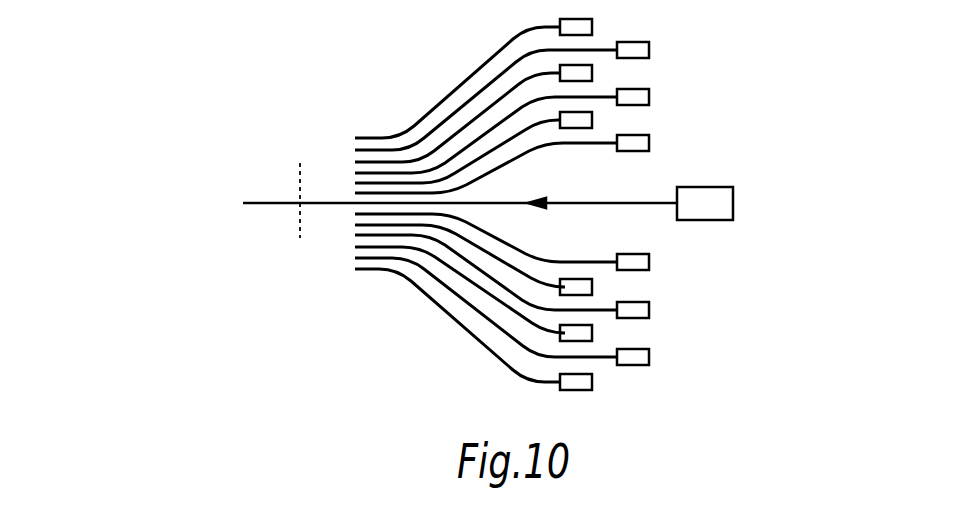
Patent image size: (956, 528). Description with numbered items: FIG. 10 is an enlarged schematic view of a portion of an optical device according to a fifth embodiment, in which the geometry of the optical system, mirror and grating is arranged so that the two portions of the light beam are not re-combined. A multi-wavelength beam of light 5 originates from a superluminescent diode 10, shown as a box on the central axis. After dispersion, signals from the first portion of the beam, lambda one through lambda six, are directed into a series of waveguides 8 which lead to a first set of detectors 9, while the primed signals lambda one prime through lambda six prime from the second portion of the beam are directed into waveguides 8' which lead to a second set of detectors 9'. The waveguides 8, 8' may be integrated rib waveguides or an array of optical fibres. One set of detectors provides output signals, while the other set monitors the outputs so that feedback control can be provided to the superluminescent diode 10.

The incident multi-wavelength divergent beam of light 5 is at (581, 203).
The receiving waveguides 8 is at (460, 204).
The waveguides 8' is at (486, 204).
The light sensors 9 is at (616, 205).
The second set of detectors 9' is at (661, 202).
The superluminescent diode 10 is at (720, 203).